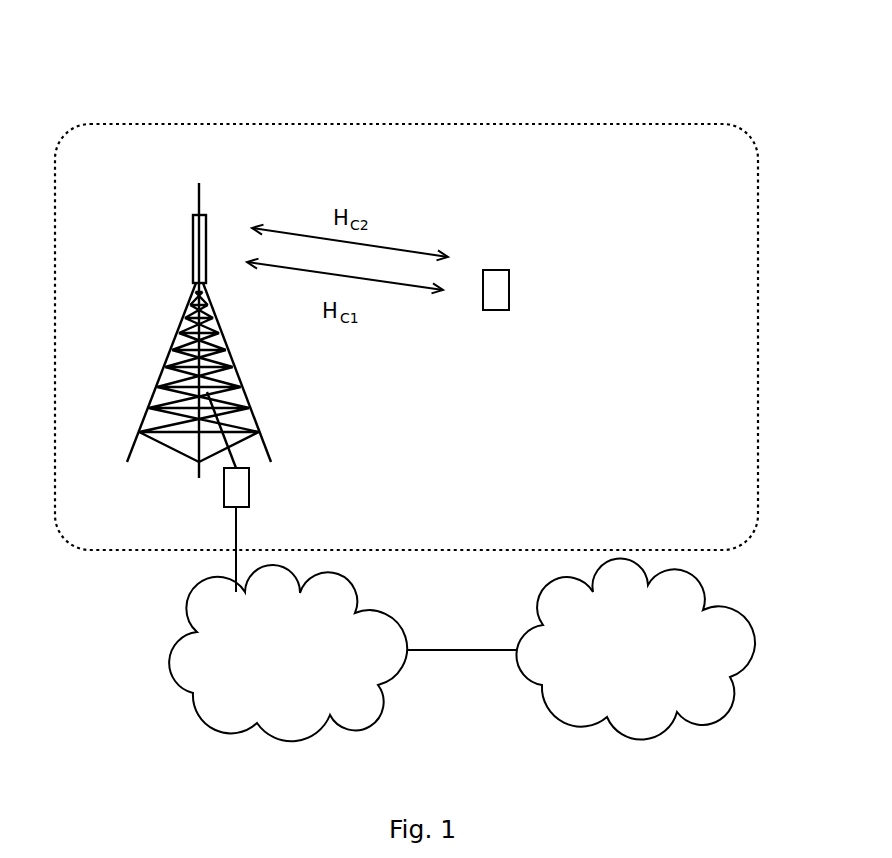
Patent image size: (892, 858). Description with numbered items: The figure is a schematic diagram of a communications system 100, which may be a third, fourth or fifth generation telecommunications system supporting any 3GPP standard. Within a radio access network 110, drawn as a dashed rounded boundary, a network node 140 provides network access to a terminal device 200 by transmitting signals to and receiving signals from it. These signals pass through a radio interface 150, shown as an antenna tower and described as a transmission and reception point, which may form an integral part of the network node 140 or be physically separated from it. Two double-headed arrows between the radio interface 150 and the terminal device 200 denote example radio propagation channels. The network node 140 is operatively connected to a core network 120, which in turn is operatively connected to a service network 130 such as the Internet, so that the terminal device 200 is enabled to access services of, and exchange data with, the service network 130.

The communications system 100 is at (711, 63).
The radio access network 110 is at (127, 169).
The core network 120 is at (248, 630).
The service network 130 is at (604, 615).
The network node 140 is at (249, 492).
The radio interface 150 is at (192, 248).
The terminal device 200 is at (503, 292).